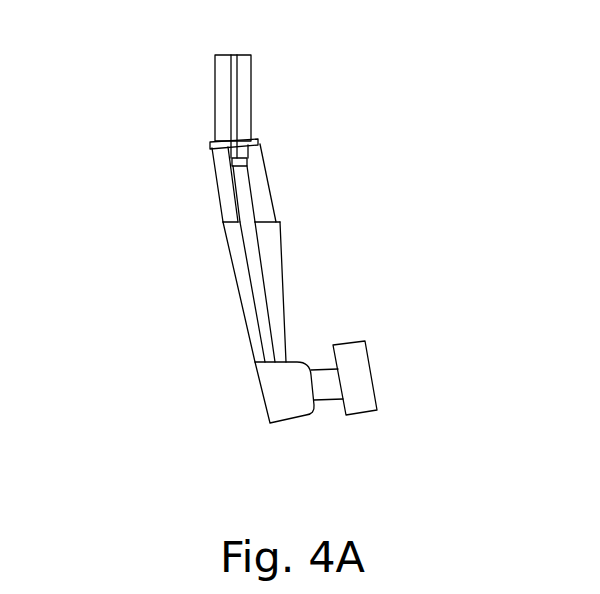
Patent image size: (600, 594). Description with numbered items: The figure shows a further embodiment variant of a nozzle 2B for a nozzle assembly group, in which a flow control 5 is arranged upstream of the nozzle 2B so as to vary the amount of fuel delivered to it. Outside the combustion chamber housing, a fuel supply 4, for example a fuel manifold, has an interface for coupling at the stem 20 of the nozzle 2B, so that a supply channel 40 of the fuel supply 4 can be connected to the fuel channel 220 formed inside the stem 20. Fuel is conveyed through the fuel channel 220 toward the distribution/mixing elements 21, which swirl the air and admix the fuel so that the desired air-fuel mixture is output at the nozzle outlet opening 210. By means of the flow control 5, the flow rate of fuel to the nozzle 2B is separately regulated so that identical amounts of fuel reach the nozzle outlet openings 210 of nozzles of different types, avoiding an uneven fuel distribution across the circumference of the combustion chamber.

The nozzle 2B is at (132, 242).
The flow control 5 is at (215, 72).
The supply channel 40 is at (232, 160).
The fuel supply 4 is at (263, 141).
The stem 20 is at (238, 305).
The fuel channel 220 is at (260, 258).
The distribution/mixing elements 21 is at (297, 418).
The nozzle outlet opening 210 is at (373, 375).